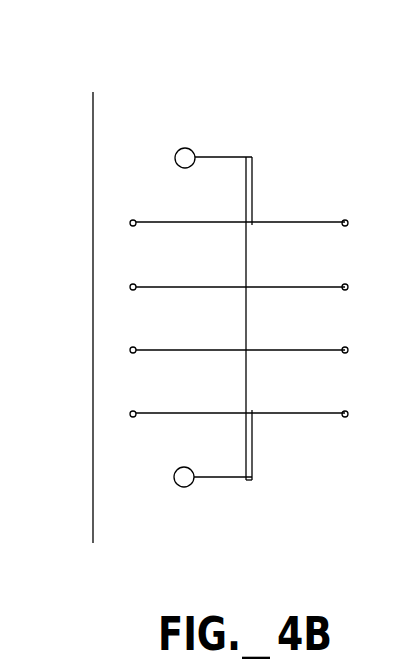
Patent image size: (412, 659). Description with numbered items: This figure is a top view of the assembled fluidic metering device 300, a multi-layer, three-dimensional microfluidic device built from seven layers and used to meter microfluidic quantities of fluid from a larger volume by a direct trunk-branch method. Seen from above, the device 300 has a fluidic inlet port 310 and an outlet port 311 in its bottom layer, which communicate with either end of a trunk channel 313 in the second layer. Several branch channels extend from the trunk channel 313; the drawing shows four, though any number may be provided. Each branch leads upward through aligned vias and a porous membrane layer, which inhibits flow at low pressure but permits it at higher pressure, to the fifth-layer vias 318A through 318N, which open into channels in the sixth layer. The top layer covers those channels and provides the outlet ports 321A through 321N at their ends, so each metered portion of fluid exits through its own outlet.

The fluidic metering device 300 is at (224, 70).
The outlet port 311 is at (175, 158).
The fluidic inlet port 310 is at (174, 478).
The trunk channel 313 is at (246, 325).
The outlet port 321A is at (131, 222).
The outlet port 321N is at (131, 414).
The via 318A is at (345, 220).
The via 318N is at (295, 416).